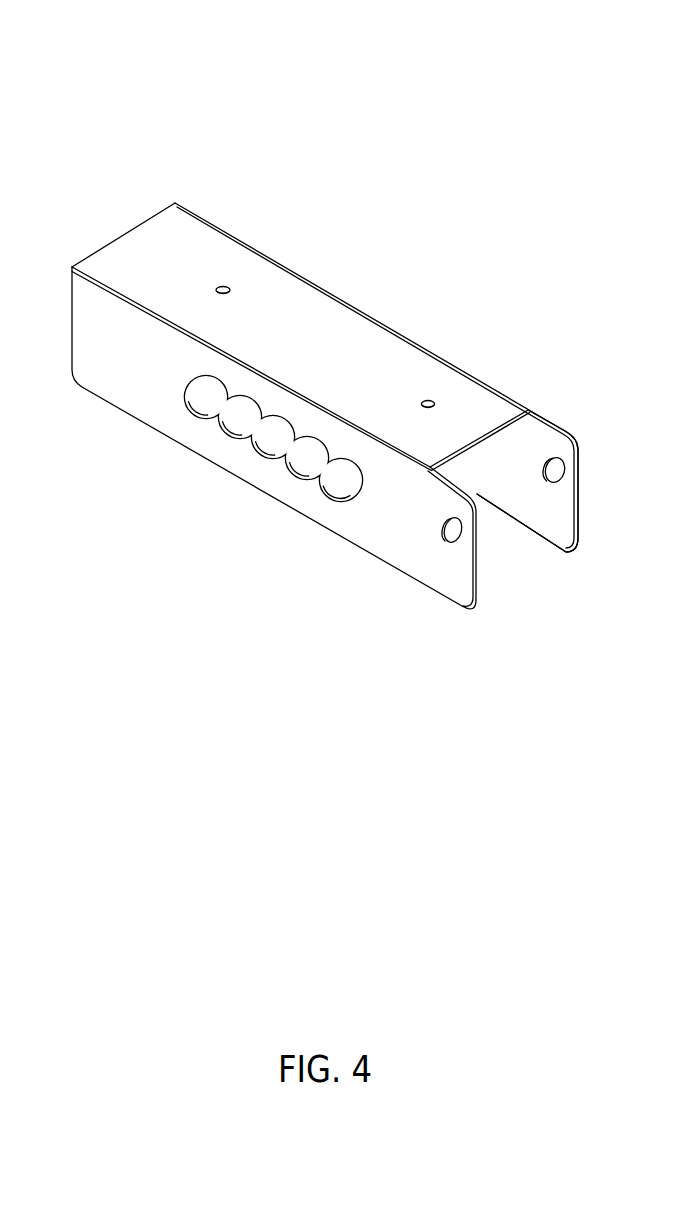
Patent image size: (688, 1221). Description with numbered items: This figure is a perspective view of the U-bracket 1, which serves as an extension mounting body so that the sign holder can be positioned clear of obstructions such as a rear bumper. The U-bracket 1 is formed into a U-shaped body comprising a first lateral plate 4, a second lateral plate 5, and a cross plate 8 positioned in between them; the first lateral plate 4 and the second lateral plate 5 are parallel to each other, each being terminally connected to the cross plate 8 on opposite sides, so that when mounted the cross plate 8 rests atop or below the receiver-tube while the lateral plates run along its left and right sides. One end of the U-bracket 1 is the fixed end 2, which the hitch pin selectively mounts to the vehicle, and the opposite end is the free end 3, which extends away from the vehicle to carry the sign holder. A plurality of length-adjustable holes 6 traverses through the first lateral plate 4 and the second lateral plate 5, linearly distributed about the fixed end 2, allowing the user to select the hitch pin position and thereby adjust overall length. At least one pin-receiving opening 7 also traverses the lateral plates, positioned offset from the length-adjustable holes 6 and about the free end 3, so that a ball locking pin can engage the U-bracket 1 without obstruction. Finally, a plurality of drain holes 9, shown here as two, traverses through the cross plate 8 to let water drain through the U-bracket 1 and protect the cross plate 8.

The U-bracket 1 is at (187, 122).
The fixed end 2 is at (59, 269).
The free end 3 is at (565, 406).
The first lateral plate 4 is at (555, 545).
The second lateral plate 5 is at (95, 394).
The plurality of length-adjustable holes 6 is at (189, 412).
The pin-receiving opening 7 is at (419, 532).
The cross plate 8 is at (357, 311).
The plurality of drain holes 9 is at (224, 274).